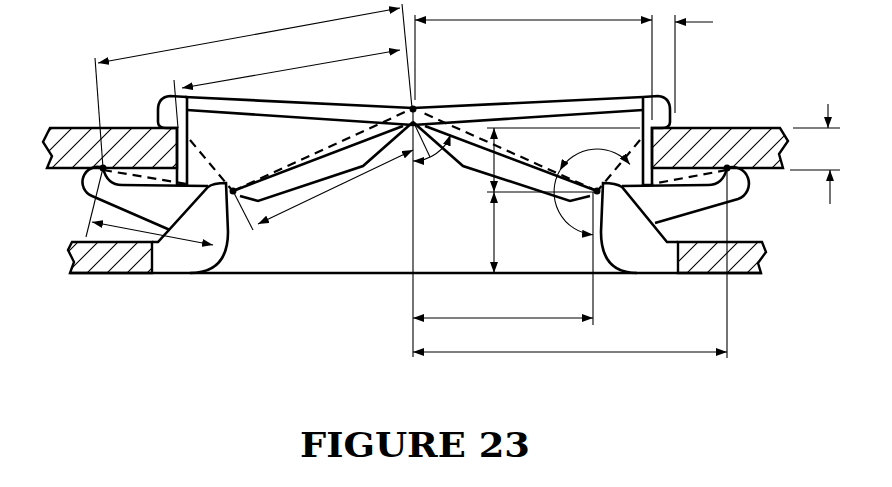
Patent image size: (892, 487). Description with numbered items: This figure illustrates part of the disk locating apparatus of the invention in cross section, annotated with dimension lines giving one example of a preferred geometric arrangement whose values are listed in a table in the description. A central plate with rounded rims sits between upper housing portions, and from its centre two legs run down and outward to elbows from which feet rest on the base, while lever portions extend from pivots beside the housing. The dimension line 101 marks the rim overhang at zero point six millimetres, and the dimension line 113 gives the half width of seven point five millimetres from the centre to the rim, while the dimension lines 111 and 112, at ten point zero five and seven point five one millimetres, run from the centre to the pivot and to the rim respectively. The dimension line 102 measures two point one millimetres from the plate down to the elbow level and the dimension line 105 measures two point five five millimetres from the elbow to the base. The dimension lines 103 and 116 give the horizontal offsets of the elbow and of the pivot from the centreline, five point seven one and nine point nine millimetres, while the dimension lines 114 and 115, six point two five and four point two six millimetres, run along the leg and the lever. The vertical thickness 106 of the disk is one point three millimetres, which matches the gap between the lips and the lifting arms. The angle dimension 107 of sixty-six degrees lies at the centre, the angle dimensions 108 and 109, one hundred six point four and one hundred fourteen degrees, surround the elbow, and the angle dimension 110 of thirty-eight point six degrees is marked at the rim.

The dimension line 101 is at (714, 61).
The dimension line 102 is at (492, 156).
The dimension line 103 is at (503, 258).
The dimension line 105 is at (473, 232).
The vertical thickness of the disk 106 is at (824, 154).
The angle dimension 107 is at (434, 152).
The angle dimension 108 is at (595, 151).
The angle dimension 109 is at (566, 210).
The angle dimension 110 is at (658, 152).
The dimension line 111 is at (253, 86).
The dimension line 112 is at (287, 89).
The dimension line 113 is at (533, 61).
The dimension line 114 is at (323, 190).
The dimension line 115 is at (127, 206).
The dimension line 116 is at (570, 264).